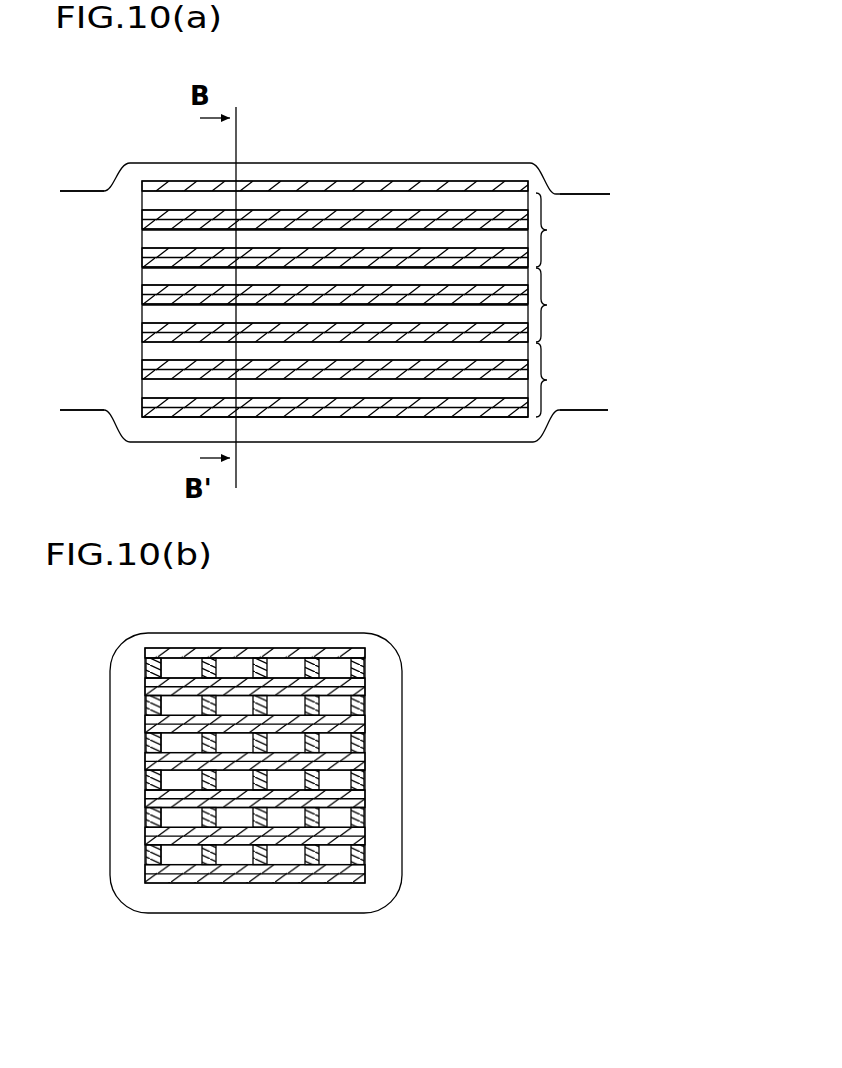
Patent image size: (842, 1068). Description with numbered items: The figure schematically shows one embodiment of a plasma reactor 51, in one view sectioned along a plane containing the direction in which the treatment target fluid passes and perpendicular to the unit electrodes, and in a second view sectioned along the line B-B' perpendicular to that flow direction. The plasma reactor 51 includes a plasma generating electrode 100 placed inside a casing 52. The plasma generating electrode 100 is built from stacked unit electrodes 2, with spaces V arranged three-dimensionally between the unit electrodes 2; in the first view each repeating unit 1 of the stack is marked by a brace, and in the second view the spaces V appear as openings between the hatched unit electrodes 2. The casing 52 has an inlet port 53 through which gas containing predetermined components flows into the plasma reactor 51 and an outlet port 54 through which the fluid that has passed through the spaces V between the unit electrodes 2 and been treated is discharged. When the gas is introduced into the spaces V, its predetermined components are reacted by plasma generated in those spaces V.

In FIG. 10A, the unit 1 is at (553, 305).
In FIG. 10A, the unit electrode 2 is at (435, 252).
In FIG. 10B, the unit electrode 2 is at (365, 681).
In FIG. 10A, the space V is at (160, 315).
In FIG. 10B, the space V is at (172, 707).
In FIG. 10A, the plasma reactor 51 is at (344, 294).
In FIG. 10B, the plasma reactor 51 is at (278, 796).
In FIG. 10A, the casing 52 is at (315, 163).
In FIG. 10B, the casing 52 is at (312, 913).
In FIG. 10A, the inlet port 53 is at (62, 225).
In FIG. 10A, the outlet port 54 is at (588, 338).
In FIG. 10A, the plasma generating electrode 100 is at (307, 306).
In FIG. 10B, the plasma generating electrode 100 is at (271, 765).